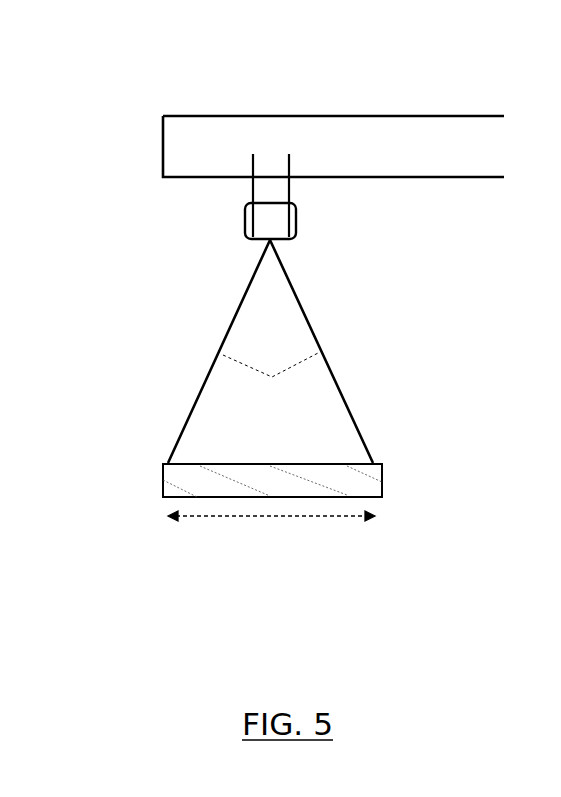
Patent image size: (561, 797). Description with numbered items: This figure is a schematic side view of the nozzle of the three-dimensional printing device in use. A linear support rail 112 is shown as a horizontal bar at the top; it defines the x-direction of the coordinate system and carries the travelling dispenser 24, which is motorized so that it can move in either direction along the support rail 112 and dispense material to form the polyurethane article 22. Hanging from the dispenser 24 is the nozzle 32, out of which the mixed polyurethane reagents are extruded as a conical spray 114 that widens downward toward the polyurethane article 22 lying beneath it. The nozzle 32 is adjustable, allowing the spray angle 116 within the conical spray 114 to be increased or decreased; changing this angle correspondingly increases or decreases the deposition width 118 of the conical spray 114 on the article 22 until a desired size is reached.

The linear support rail 112 is at (425, 127).
The travelling dispenser 24 is at (282, 189).
The nozzle 32 is at (245, 212).
The conical spray 114 is at (237, 304).
The spray angle 116 is at (305, 357).
The polyurethane article 22 is at (372, 481).
The deposition width 118 is at (271, 519).